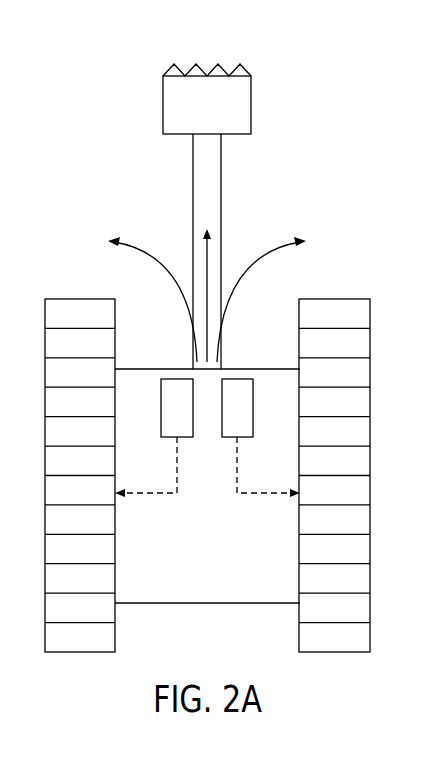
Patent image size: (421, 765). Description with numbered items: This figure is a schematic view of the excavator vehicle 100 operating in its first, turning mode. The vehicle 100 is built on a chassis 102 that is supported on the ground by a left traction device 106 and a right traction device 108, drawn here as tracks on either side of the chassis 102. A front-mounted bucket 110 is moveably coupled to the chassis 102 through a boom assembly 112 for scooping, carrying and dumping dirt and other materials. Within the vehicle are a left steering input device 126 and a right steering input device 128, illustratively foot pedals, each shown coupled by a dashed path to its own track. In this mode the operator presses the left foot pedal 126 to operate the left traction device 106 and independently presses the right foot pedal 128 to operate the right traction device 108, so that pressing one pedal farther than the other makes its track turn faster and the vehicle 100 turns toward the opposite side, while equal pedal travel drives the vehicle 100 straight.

The vehicle 100 is at (328, 100).
The chassis 102 is at (207, 605).
The left traction device 106 is at (80, 298).
The right traction device 108 is at (335, 298).
The bucket 110 is at (163, 112).
The boom assembly 112 is at (222, 173).
The left steering input device 126 is at (178, 378).
The right steering input device 128 is at (236, 378).